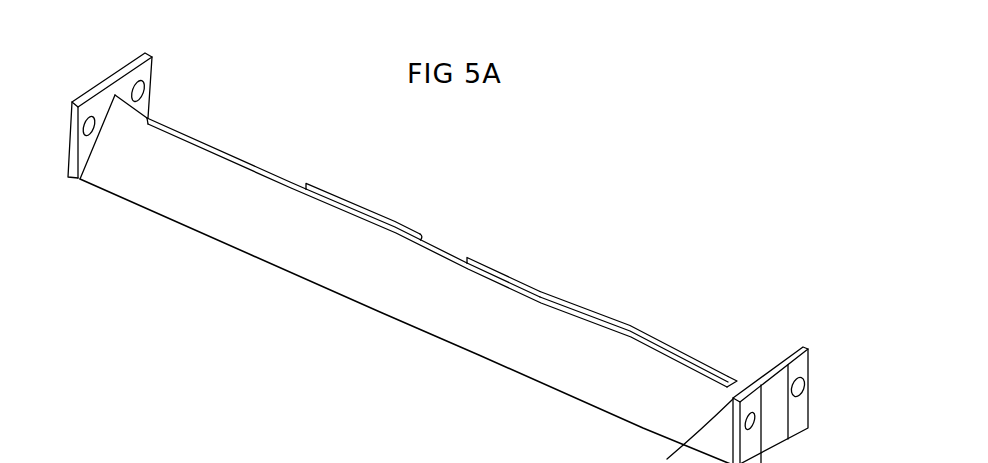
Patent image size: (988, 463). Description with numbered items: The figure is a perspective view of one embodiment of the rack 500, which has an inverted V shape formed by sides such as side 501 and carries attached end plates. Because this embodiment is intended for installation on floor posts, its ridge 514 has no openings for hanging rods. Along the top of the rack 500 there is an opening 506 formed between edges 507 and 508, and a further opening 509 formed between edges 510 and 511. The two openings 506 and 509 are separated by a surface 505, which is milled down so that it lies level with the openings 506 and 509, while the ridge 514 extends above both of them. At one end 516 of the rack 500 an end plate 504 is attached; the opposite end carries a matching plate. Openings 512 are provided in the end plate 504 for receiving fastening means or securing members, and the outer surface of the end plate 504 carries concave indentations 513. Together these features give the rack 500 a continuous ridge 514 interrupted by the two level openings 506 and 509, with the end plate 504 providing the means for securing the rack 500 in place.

The rack 500 is at (272, 153).
The side 501 is at (337, 265).
The end plate 504 is at (67, 153).
The surface 505 is at (445, 252).
The opening 506 is at (598, 322).
The edge 507 is at (467, 268).
The edge 508 is at (727, 378).
The opening 509 is at (307, 188).
The edge 510 is at (150, 118).
The edge 511 is at (419, 238).
The openings 512 is at (88, 127).
The concave indentations 513 is at (107, 78).
The ridge 514 is at (144, 93).
The end 516 is at (100, 139).